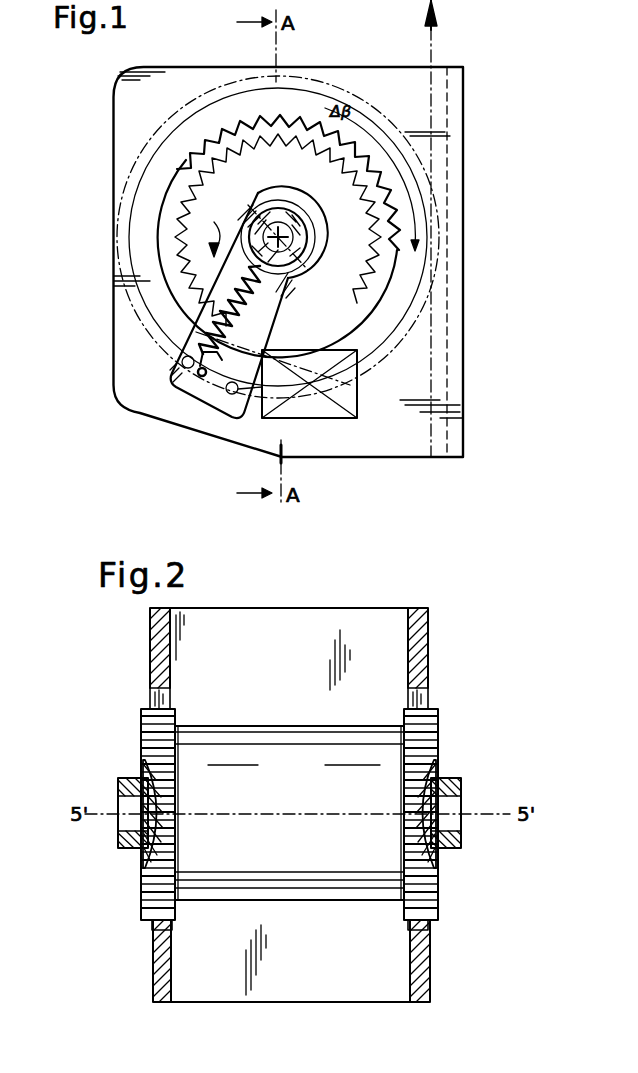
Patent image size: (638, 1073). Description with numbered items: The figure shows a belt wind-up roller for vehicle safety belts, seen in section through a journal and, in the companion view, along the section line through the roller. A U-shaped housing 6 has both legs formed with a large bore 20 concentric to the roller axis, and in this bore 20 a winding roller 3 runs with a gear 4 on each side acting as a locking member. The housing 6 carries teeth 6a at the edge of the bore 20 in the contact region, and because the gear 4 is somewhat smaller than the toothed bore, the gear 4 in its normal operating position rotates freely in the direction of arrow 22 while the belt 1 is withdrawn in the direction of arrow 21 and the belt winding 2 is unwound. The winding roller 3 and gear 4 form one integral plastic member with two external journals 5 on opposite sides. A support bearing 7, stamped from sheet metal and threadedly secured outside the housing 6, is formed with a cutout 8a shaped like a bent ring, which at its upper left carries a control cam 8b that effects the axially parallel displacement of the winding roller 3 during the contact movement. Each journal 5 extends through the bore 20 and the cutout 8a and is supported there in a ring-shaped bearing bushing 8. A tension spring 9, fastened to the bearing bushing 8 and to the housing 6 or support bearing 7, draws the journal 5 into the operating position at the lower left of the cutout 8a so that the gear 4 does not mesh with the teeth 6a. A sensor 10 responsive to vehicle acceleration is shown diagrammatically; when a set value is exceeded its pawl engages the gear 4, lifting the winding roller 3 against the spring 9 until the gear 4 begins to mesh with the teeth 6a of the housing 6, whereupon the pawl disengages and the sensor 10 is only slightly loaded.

In FIG. 1, the belt 1 is at (428, 50).
In FIG. 1, the belt winding 2 is at (432, 300).
In FIG. 1, the winding roller 3 is at (190, 298).
In FIG. 2, the winding roller 3 is at (300, 745).
In FIG. 1, the gear 4 is at (178, 272).
In FIG. 2, the gear 4 is at (148, 722).
In FIG. 1, the journal 5 is at (303, 203).
In FIG. 2, the journal 5 is at (123, 800).
In FIG. 1, the housing 6 is at (430, 378).
In FIG. 2, the housing 6 is at (318, 618).
In FIG. 1, the teeth 6a is at (236, 127).
In FIG. 2, the teeth 6a is at (158, 697).
In FIG. 1, the support bearing 7 is at (352, 298).
In FIG. 1, the bearing bushing 8 is at (268, 190).
In FIG. 2, the bearing bushing 8 is at (136, 838).
In FIG. 1, the cutout 8a is at (399, 250).
In FIG. 1, the control cam 8b is at (262, 197).
In FIG. 1, the tension spring 9 is at (217, 368).
In FIG. 1, the sensor 10 is at (346, 418).
In FIG. 1, the bore 20 is at (164, 212).
In FIG. 1, the arrow 21 is at (436, 14).
In FIG. 1, the arrow 22 is at (205, 227).